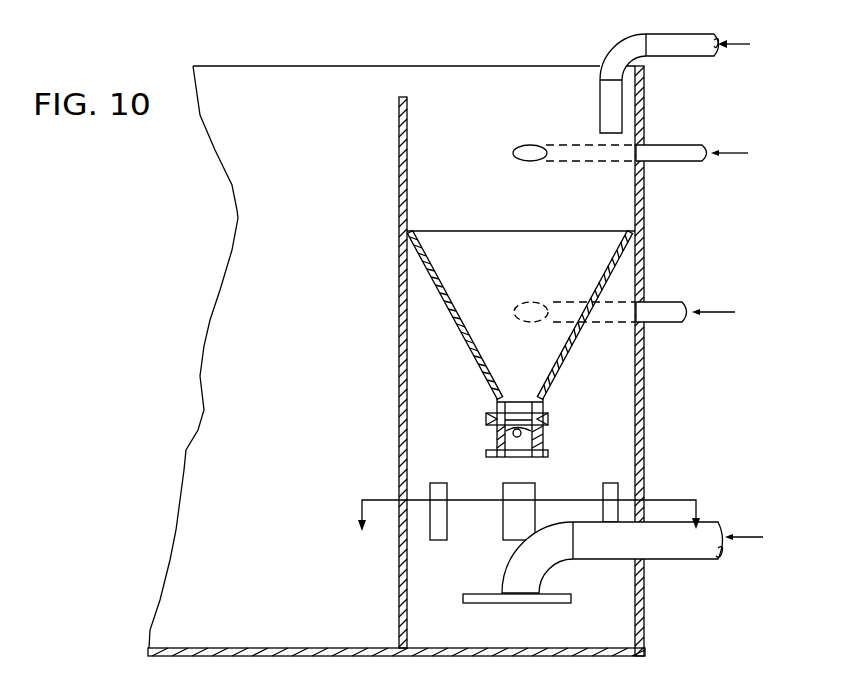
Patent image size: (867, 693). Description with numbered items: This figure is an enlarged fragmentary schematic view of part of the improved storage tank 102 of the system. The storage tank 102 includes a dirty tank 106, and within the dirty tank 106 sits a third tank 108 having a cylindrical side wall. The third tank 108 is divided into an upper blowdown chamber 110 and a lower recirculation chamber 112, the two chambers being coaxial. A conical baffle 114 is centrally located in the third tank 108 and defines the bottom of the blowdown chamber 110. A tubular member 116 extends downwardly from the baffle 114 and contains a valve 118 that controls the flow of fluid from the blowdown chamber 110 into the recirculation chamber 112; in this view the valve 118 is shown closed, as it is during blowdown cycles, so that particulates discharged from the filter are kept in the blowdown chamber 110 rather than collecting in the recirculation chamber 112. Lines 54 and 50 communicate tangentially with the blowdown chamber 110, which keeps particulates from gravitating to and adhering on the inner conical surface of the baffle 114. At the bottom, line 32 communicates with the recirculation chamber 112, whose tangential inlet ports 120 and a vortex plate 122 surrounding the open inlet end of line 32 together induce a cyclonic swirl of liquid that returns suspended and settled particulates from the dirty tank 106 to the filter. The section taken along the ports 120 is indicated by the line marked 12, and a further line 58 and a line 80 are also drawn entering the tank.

The improved storage tank 102 is at (306, 52).
The dirty tank 106 is at (302, 332).
The third tank 108 is at (393, 407).
The blowdown chamber 110 is at (455, 252).
The recirculation chamber 112 is at (604, 444).
The conical baffle 114 is at (548, 368).
The tubular member 116 is at (494, 437).
The valve 118 is at (518, 438).
The tangential inlet ports 120 is at (503, 524).
The vortex plate 122 is at (552, 604).
The line 32 is at (685, 560).
The inlet elbow pipe 58 is at (690, 54).
The line 50 is at (630, 181).
The line 54 is at (671, 160).
The conduit 80 is at (667, 302).
The section line 12- 12 is at (532, 504).